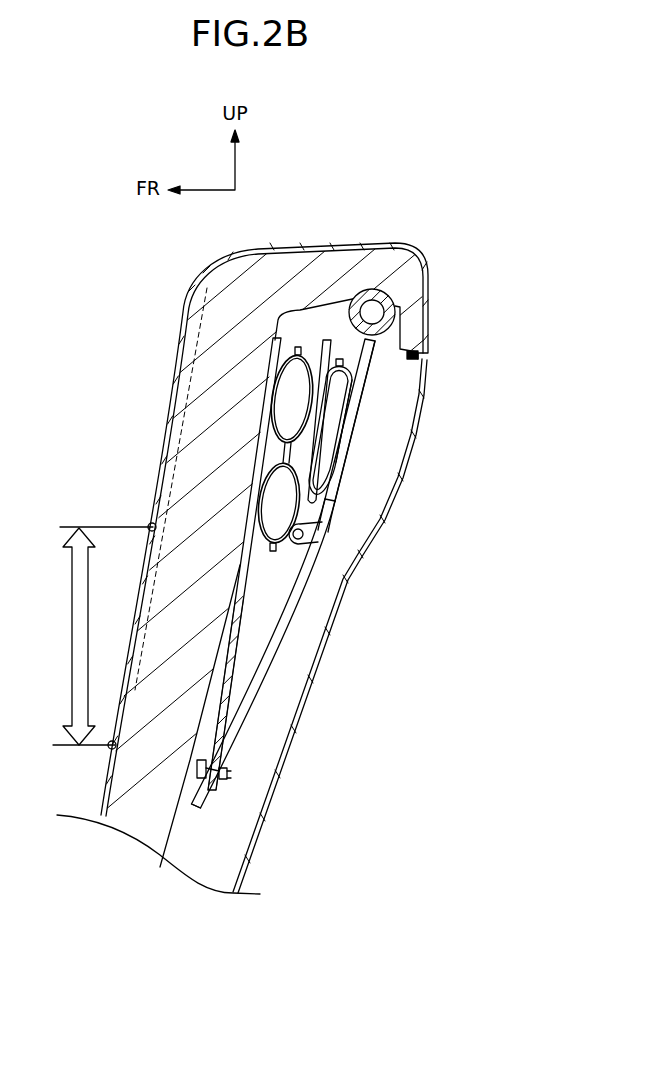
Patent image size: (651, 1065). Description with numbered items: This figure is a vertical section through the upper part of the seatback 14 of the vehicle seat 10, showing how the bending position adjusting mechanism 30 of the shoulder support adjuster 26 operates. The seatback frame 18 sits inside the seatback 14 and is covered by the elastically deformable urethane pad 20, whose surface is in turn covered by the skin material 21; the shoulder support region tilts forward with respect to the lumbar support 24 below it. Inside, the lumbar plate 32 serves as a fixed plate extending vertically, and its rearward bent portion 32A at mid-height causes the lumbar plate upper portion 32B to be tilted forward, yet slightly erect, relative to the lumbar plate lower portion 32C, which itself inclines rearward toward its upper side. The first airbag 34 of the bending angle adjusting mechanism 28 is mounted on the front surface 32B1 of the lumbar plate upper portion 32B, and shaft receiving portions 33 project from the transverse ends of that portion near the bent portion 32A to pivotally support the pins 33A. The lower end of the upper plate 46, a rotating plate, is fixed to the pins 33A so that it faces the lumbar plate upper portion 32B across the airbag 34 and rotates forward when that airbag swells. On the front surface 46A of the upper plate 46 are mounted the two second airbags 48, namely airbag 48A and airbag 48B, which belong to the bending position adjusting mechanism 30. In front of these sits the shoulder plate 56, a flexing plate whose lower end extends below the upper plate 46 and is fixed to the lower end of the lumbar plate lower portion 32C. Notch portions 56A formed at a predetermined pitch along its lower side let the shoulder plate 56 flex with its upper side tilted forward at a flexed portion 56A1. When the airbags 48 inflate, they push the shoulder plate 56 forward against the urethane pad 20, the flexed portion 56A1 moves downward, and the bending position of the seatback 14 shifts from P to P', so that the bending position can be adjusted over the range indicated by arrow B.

The vehicle seat 10 is at (174, 258).
The seatback 14 is at (141, 602).
The seatback frame 18 is at (400, 309).
The urethane pad 20 is at (244, 291).
The skin material 21 is at (189, 293).
The lumbar support 24 is at (92, 804).
The shoulder support adjuster 26 is at (390, 442).
The bending angle adjusting mechanism 28 is at (346, 348).
The bending position adjusting mechanism 30 is at (301, 338).
The lumbar plate 32 is at (299, 599).
The bent portion 32A is at (305, 576).
The lumbar plate upper portion 32B is at (383, 471).
The front surface 32B1 is at (375, 495).
The lumbar plate lower portion 32C is at (240, 640).
The shaft receiving portions 33 is at (316, 522).
The pins 33A is at (304, 548).
The airbag 34 is at (429, 381).
The upper plate 46 is at (307, 416).
The front surface 46A is at (357, 431).
The airbags 48 is at (207, 449).
The airbag 48A is at (262, 430).
The airbag 48B is at (264, 458).
The shoulder plate 56 is at (271, 360).
The notch portions 56A is at (243, 622).
The flexed portion 56A1 is at (225, 729).
The bending position P is at (126, 516).
The bending position P' is at (104, 714).
The arrow B is at (88, 660).